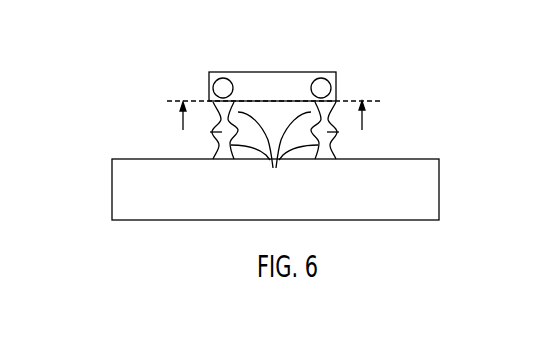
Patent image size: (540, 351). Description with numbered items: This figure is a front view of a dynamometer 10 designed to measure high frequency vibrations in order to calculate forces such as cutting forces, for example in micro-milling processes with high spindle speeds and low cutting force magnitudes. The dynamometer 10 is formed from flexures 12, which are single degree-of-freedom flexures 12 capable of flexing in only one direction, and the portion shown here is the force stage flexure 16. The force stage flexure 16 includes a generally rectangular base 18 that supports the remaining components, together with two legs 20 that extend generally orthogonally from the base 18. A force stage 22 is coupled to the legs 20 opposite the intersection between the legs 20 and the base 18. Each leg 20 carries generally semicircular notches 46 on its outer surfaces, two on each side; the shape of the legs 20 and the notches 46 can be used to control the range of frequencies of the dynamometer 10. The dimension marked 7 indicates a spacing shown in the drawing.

The dynamometer 10 is at (435, 93).
The flexure 12 is at (348, 90).
The force stage flexure 16 is at (196, 87).
The base 18 is at (440, 198).
The legs 20 is at (212, 130).
The force stage 22 is at (302, 72).
The notches 46 is at (212, 110).
The gap height dimension 7 is at (273, 129).